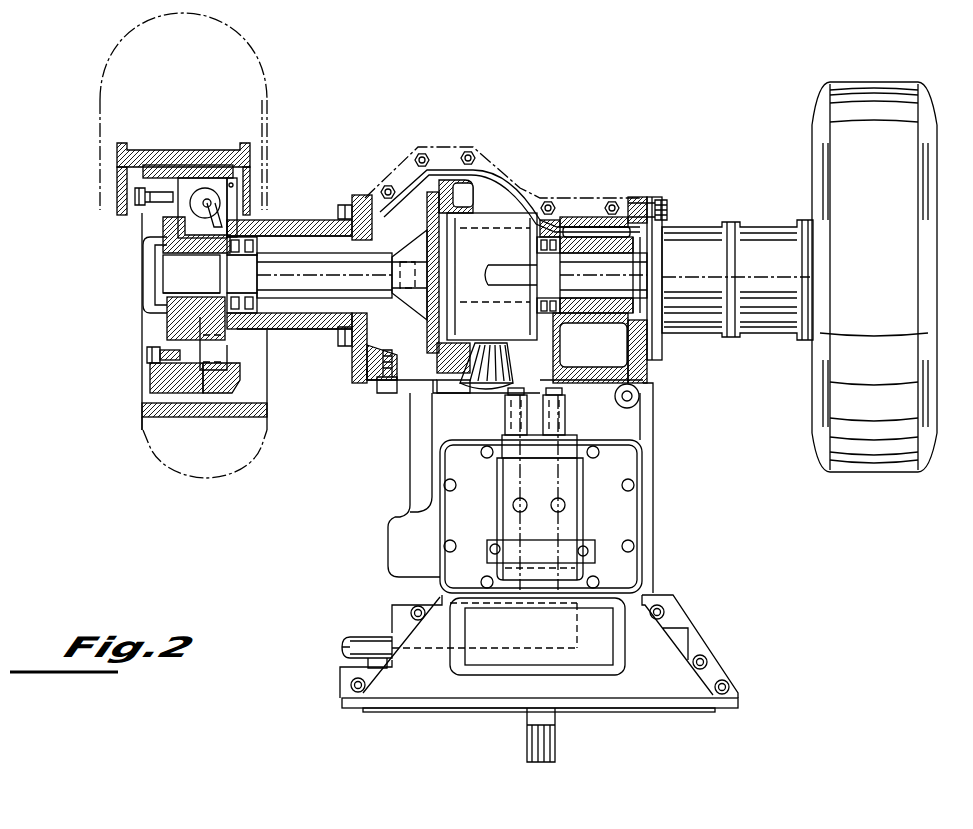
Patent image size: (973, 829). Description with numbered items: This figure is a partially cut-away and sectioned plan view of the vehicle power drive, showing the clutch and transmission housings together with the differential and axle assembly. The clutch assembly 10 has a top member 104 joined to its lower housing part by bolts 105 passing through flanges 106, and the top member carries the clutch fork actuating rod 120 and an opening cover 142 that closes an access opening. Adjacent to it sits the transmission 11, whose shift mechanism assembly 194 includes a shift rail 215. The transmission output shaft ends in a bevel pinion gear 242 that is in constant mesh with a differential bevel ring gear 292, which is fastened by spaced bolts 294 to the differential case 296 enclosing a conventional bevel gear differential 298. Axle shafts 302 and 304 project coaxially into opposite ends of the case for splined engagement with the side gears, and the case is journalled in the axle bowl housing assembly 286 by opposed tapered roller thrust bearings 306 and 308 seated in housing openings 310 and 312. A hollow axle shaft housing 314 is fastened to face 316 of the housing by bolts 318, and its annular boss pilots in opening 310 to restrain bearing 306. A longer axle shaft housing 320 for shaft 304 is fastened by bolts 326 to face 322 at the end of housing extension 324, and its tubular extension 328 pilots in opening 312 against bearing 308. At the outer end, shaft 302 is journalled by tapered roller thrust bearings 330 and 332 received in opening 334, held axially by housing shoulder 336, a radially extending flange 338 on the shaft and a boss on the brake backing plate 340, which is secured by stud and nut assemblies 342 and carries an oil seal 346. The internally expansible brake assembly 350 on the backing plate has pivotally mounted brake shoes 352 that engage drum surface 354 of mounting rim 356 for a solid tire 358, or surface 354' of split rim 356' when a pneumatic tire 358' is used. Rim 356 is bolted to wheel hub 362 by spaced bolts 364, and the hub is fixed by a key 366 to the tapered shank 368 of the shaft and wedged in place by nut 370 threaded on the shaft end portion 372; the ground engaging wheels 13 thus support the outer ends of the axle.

The clutch assembly 10 is at (717, 635).
The transmission 11 is at (630, 513).
The ground engaging wheels 13 is at (807, 101).
The top member 104 is at (643, 687).
The bolts 105 is at (411, 612).
The flanges 106 is at (380, 682).
The clutch fork actuating rod 120 is at (353, 637).
The opening cover 142 is at (583, 655).
The shift mechanism assembly 194 is at (587, 488).
The shift rail 215 is at (568, 423).
The bevel pinion gear 242 is at (480, 393).
The axle bowl housing assembly 286 is at (487, 180).
The differential bevel ring gear 292 is at (437, 207).
The bolts 294 is at (403, 400).
The differential case 296 is at (493, 220).
The bevel gear differential 298 is at (462, 254).
The axle shaft 302 is at (327, 280).
The axle shaft 304 is at (610, 280).
The tapered roller thrust bearing 306 is at (350, 240).
The tapered roller thrust bearing 308 is at (500, 366).
The housing opening 310 is at (360, 200).
The housing opening 312 is at (551, 237).
The axle shaft housing 314 is at (293, 333).
The face 316 is at (357, 355).
The bolts 318 is at (333, 213).
The axle shaft housing 320 is at (702, 334).
The face 322 is at (652, 340).
The housing extension 324 is at (643, 370).
The bolts 326 is at (668, 208).
The tubular extension 328 is at (591, 300).
The tapered roller thrust bearing 330 is at (289, 221).
The tapered roller thrust bearing 332 is at (242, 295).
The opening 334 is at (223, 207).
The housing shoulder 336 is at (290, 303).
The radially extending flange 338 is at (242, 274).
The brake backing plate 340 is at (233, 182).
The stud and nut assemblies 342 is at (243, 330).
The oil seal 346 is at (242, 253).
The brake assembly 350 is at (233, 197).
The brake shoes 352 is at (176, 384).
The drum surface 354 is at (221, 387).
The surface 354' is at (188, 157).
The mounting rim 356 is at (226, 380).
The split rim 356' is at (153, 286).
The solid tire 358 is at (226, 454).
The pneumatic tire 358' is at (211, 111).
The wheel hub 362 is at (163, 220).
The bolts 364 is at (143, 353).
The key 366 is at (209, 289).
The tapered shank 368 is at (209, 273).
The nut 370 is at (140, 298).
The threaded end portion 372 is at (140, 272).